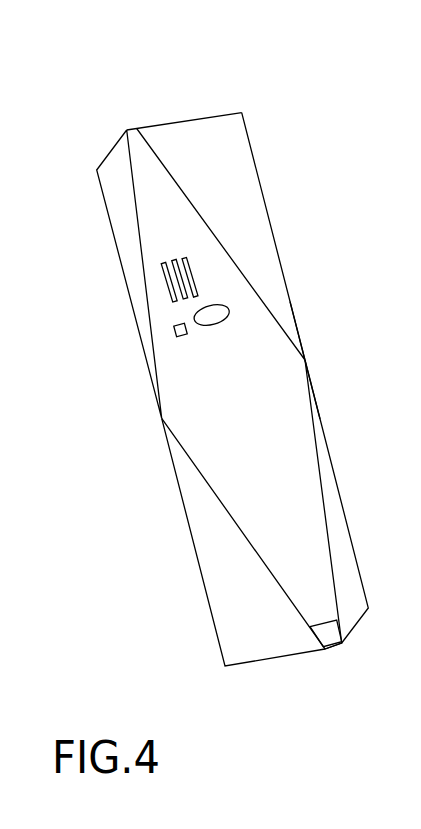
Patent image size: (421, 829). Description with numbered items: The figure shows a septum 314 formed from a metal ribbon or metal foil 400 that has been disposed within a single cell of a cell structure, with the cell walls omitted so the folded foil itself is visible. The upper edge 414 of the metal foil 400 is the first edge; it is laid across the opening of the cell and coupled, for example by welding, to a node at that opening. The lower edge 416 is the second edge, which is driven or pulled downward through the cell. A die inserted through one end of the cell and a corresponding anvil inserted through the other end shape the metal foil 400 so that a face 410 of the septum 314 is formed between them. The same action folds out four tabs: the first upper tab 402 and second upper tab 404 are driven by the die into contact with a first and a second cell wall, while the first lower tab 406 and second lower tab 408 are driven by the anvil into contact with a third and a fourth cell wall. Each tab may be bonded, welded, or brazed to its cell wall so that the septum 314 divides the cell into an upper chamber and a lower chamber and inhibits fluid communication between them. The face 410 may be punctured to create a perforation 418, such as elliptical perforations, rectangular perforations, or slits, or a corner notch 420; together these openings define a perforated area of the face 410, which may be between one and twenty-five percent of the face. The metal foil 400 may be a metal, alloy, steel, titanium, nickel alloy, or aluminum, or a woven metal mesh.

The metal foil 400 is at (232, 365).
The first upper tab 402 is at (252, 157).
The second upper tab 404 is at (105, 202).
The first lower tab 406 is at (342, 505).
The second lower tab 408 is at (202, 578).
The face 410 is at (215, 402).
The upper edge 414 is at (171, 124).
The lower edge 416 is at (322, 649).
The perforation 418 is at (178, 245).
The corner notch 420 is at (330, 628).
The septum 314 is at (330, 344).